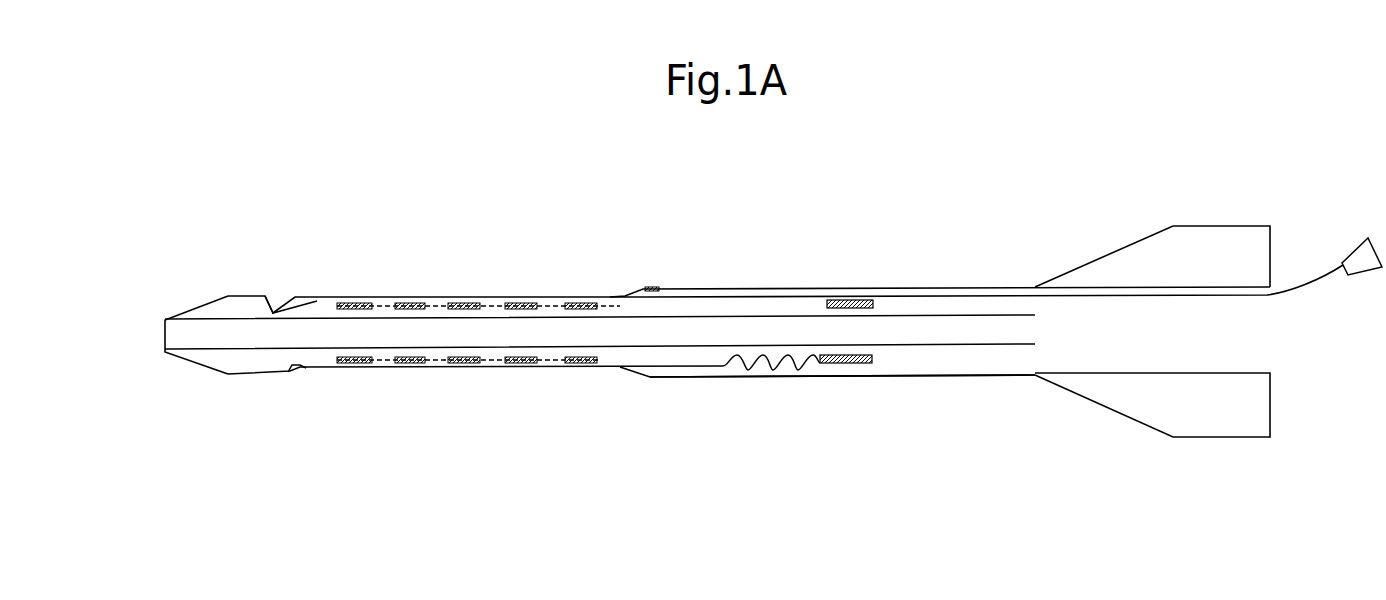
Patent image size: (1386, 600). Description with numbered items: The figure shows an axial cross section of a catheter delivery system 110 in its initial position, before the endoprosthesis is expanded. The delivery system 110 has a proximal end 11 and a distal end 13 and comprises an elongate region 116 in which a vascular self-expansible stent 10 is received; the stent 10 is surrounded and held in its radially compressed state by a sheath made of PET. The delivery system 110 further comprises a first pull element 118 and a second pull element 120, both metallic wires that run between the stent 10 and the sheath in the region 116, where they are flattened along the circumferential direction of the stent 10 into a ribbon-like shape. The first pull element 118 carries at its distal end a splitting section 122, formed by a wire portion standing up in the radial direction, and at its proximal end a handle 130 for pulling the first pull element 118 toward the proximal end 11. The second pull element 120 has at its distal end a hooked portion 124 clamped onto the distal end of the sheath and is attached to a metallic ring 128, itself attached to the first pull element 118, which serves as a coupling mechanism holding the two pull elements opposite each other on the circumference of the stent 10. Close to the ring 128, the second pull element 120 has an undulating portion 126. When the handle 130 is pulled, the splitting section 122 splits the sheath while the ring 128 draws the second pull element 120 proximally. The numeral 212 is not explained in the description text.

The vascular self-expansible stent 10 is at (460, 360).
The proximal end 11 is at (1065, 242).
The distal end 13 is at (265, 248).
The catheter delivery system 110 is at (665, 456).
The elongate region 116 is at (503, 332).
The first pull element 118 is at (647, 298).
The second pull element 120 is at (695, 368).
The splitting section 122 is at (274, 311).
The hooked portion 124 is at (290, 368).
The undulating portion 126 is at (780, 364).
The metallic ring 128 is at (870, 364).
The handle 130 is at (1353, 240).
The band 212 is at (383, 369).